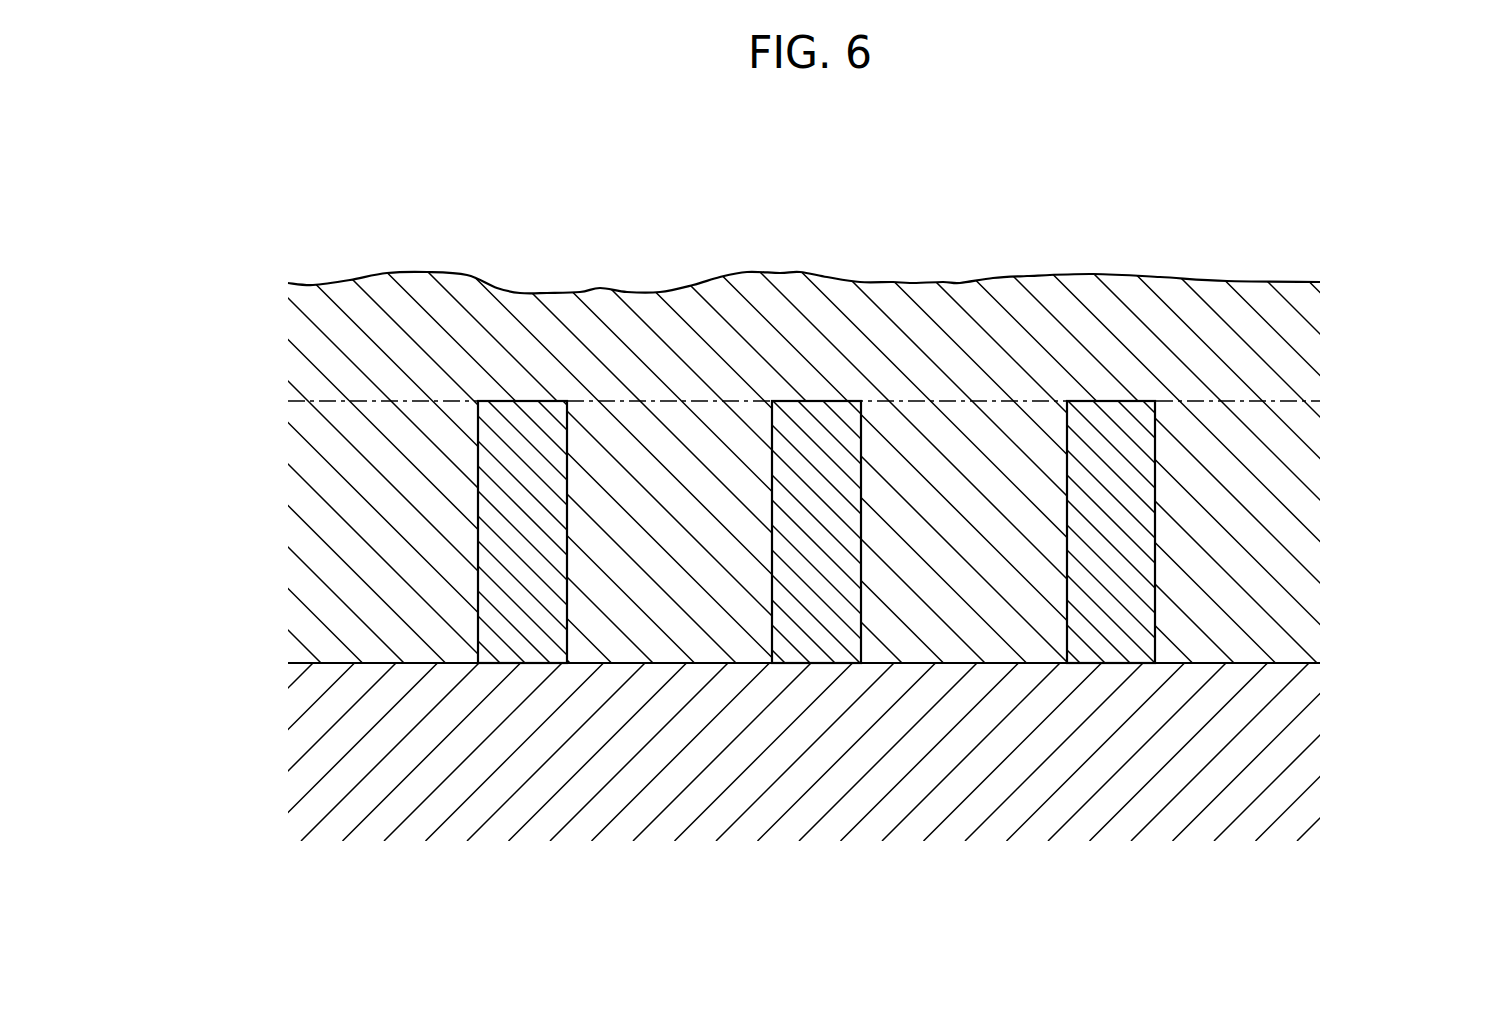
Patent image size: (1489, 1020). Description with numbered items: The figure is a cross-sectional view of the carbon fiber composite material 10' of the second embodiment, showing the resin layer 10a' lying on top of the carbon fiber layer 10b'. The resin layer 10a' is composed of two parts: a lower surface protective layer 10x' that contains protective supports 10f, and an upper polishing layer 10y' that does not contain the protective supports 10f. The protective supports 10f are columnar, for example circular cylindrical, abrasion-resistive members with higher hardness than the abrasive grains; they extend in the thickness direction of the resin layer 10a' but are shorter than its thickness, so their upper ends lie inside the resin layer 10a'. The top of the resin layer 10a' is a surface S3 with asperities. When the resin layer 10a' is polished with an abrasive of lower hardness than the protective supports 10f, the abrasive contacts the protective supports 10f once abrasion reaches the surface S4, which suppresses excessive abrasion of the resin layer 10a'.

The carbon fiber composite material 10' is at (744, 511).
The resin layer 10a' is at (744, 422).
The polishing layer 10y' is at (756, 291).
The surface protective layer 10x' is at (756, 532).
The carbon fiber layer 10b' is at (805, 752).
The protective supports 10f is at (528, 401).
The surface with asperities S3 is at (701, 281).
The surface S4 is at (975, 401).